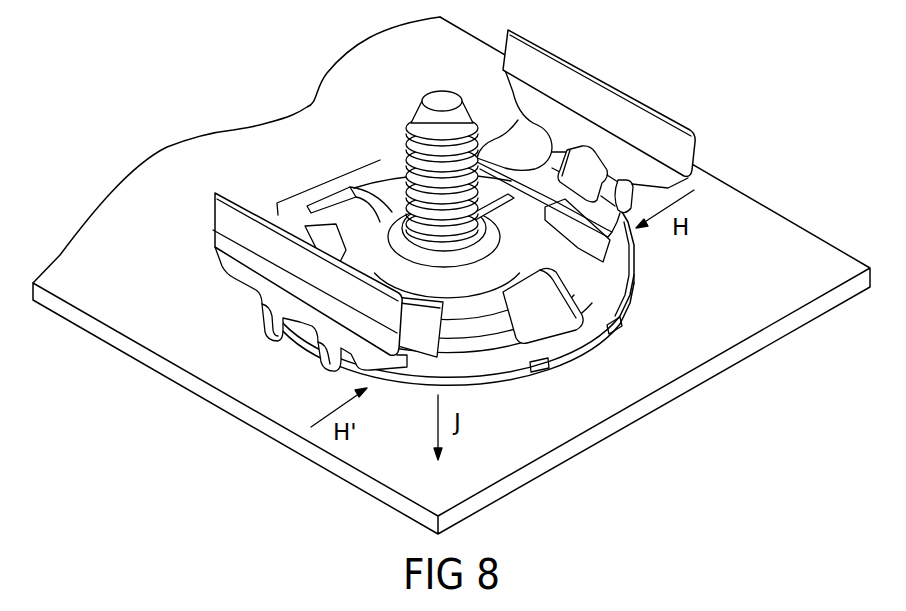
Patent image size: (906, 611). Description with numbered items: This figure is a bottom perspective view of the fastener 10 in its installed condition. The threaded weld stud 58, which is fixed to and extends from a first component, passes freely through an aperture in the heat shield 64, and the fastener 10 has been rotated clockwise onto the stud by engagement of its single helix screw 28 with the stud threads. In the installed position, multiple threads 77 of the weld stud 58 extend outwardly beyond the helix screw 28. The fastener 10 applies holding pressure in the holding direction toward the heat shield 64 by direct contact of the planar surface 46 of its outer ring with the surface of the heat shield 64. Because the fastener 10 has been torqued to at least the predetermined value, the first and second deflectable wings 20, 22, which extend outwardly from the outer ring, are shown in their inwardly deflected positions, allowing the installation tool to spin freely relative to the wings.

The fastener 10 is at (477, 243).
The first deflectable wing 20 is at (617, 133).
The second deflectable wing 22 is at (257, 282).
The single helix screw 28 is at (402, 225).
The planar surface 46 is at (513, 379).
The threaded weld stud 58 is at (423, 152).
The heat shield 64 is at (786, 248).
The threads 77 is at (483, 146).